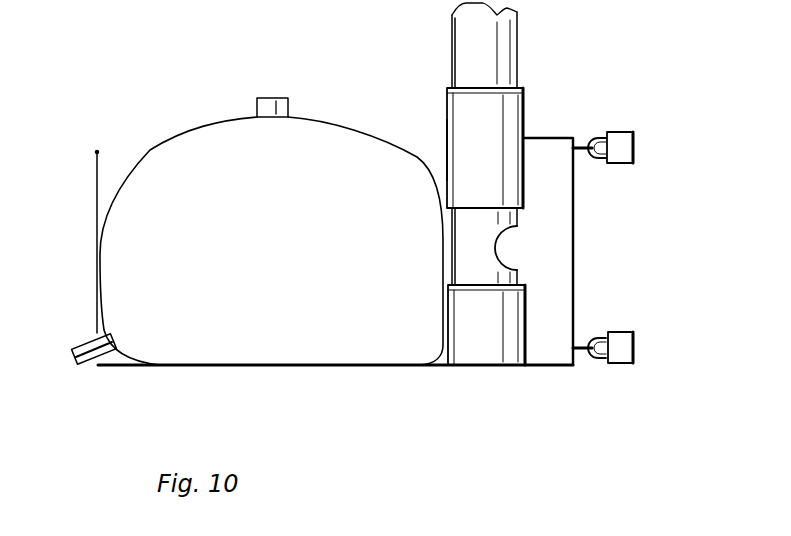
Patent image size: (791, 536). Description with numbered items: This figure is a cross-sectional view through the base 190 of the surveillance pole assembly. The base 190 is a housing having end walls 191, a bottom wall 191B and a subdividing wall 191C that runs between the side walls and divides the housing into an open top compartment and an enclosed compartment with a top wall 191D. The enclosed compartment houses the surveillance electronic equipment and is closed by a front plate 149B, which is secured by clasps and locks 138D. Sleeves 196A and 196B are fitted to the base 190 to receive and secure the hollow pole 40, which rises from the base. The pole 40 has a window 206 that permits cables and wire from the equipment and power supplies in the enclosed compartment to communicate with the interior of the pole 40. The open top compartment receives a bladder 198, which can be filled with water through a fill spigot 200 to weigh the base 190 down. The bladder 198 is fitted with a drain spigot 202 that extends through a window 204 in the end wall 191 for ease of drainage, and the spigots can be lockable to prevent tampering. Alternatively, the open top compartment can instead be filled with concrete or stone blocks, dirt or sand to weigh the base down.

The base 190 is at (132, 110).
The bladder 198 is at (292, 268).
The fill spigot 200 is at (257, 103).
The end wall 191 is at (97, 184).
The drain spigot 202 is at (80, 341).
The window 204 is at (100, 360).
The bottom wall 191B is at (285, 370).
The pole 40 is at (518, 40).
The sleeve 196A is at (524, 104).
The sleeve 196B is at (488, 366).
The subdividing wall 191C is at (446, 152).
The window 206 is at (486, 247).
The front plate 149B is at (574, 200).
The top wall 191D is at (560, 137).
The lock 138D is at (636, 352).